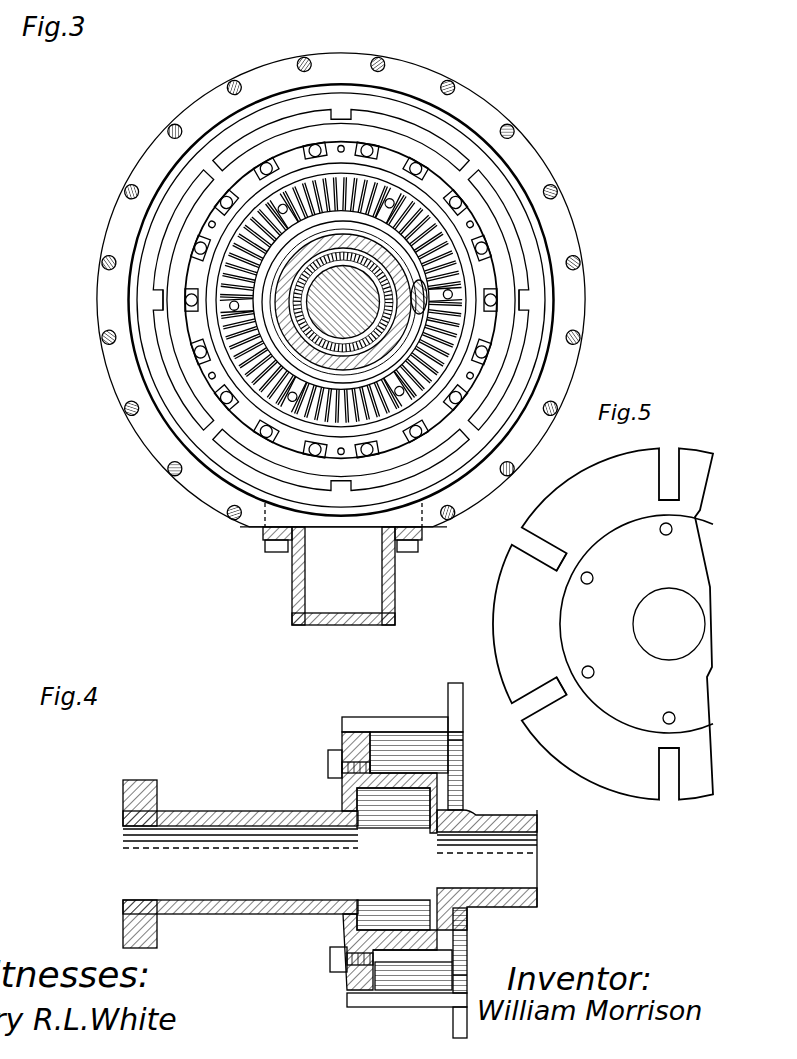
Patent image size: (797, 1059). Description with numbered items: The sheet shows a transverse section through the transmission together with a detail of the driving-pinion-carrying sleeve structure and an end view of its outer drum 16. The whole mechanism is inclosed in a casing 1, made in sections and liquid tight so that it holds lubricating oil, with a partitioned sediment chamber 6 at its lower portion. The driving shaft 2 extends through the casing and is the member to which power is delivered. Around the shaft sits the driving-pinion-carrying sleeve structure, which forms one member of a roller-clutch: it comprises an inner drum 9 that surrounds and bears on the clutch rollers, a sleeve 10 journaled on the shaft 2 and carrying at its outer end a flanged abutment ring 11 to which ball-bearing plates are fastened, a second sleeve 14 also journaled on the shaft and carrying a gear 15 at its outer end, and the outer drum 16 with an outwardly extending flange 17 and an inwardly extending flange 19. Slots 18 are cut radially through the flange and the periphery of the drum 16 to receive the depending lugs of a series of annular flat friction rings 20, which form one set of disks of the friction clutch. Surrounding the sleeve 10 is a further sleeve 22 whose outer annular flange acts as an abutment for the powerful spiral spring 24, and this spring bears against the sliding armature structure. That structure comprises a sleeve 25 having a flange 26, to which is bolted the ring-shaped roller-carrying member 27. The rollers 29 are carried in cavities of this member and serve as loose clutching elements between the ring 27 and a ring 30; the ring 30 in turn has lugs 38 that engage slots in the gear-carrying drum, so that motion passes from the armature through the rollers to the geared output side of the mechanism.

In FIG. 3, the casing 1 is at (118, 222).
In FIG. 3, the driving shaft 2 is at (344, 302).
In FIG. 3, the sediment chamber 6 is at (292, 573).
In FIG. 4, the inner drum 9 is at (400, 772).
In FIG. 3, the sleeve 10 is at (387, 263).
In FIG. 4, the sleeve 10 is at (240, 813).
In FIG. 4, the flanged abutment ring 11 is at (123, 803).
In FIG. 4, the second sleeve 14 is at (470, 812).
In FIG. 4, the gear 15 is at (502, 813).
In FIG. 4, the outer drum 16 is at (403, 987).
In FIG. 5, the outwardly extending flange 17 is at (498, 600).
In FIG. 4, the outwardly extending flange 17 is at (463, 697).
In FIG. 5, the slots 18 is at (661, 455).
In FIG. 4, the slots 18 is at (362, 722).
In FIG. 5, the inwardly extending flange 19 is at (562, 565).
In FIG. 4, the inwardly extending flange 19 is at (461, 745).
In FIG. 3, the annular flat friction rings 20 is at (262, 172).
In FIG. 3, the sleeve 22 is at (294, 319).
In FIG. 3, the spiral spring 24 is at (428, 319).
In FIG. 3, the sleeve 25 is at (343, 383).
In FIG. 3, the flange 26 is at (426, 293).
In FIG. 3, the ring-shaped roller-carrying member 27 is at (380, 157).
In FIG. 3, the rollers 29 is at (428, 169).
In FIG. 3, the ring 30 is at (341, 300).
In FIG. 3, the lugs 38 is at (340, 110).